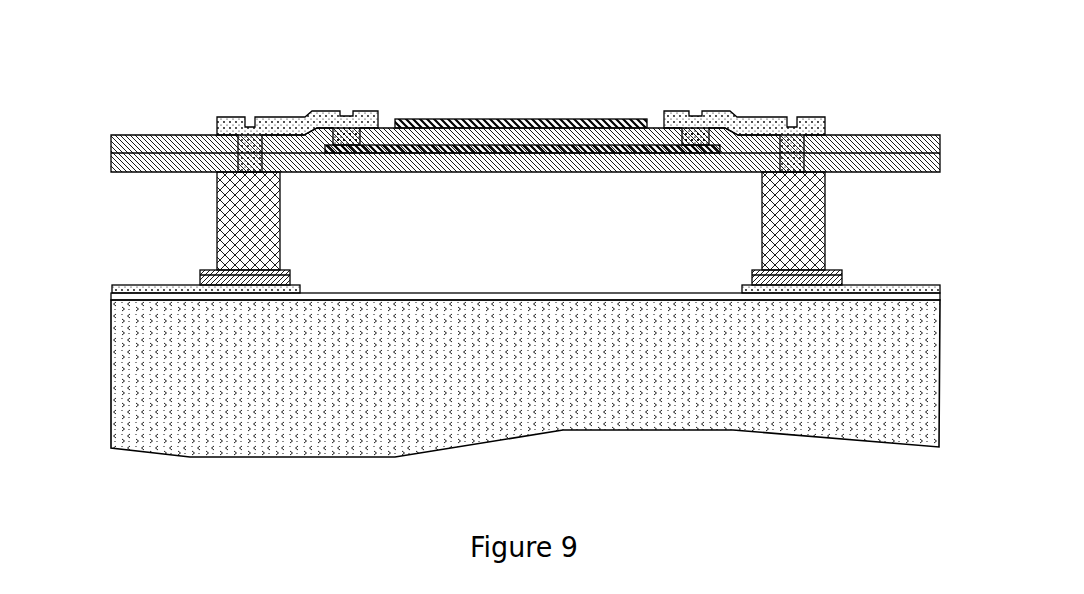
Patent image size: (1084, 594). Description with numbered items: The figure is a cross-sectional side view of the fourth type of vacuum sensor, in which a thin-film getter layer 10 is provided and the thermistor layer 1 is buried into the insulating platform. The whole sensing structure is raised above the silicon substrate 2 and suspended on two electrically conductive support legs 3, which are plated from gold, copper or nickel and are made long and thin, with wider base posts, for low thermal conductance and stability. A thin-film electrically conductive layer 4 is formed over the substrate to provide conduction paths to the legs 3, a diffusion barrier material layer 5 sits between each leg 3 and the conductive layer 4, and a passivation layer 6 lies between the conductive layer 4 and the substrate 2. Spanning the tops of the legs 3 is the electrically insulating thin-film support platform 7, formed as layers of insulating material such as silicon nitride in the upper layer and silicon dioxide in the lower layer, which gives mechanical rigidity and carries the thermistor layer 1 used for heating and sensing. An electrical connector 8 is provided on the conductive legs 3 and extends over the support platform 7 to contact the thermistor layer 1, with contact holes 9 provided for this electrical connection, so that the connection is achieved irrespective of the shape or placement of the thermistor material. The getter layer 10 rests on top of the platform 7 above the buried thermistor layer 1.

The thermistor layer 1 is at (426, 143).
The silicon substrate 2 is at (140, 417).
The electrically conductive support legs 3 is at (238, 242).
The thin-film electrically conductive layer 4 is at (180, 292).
The diffusion barrier material layer 5 is at (228, 280).
The passivation layer 6 is at (135, 298).
The electrically insulating thin-film support platform 7 is at (623, 135).
The electrical connector 8 is at (367, 122).
The contact holes 9 is at (342, 105).
The thin-film getter layer 10 is at (490, 122).